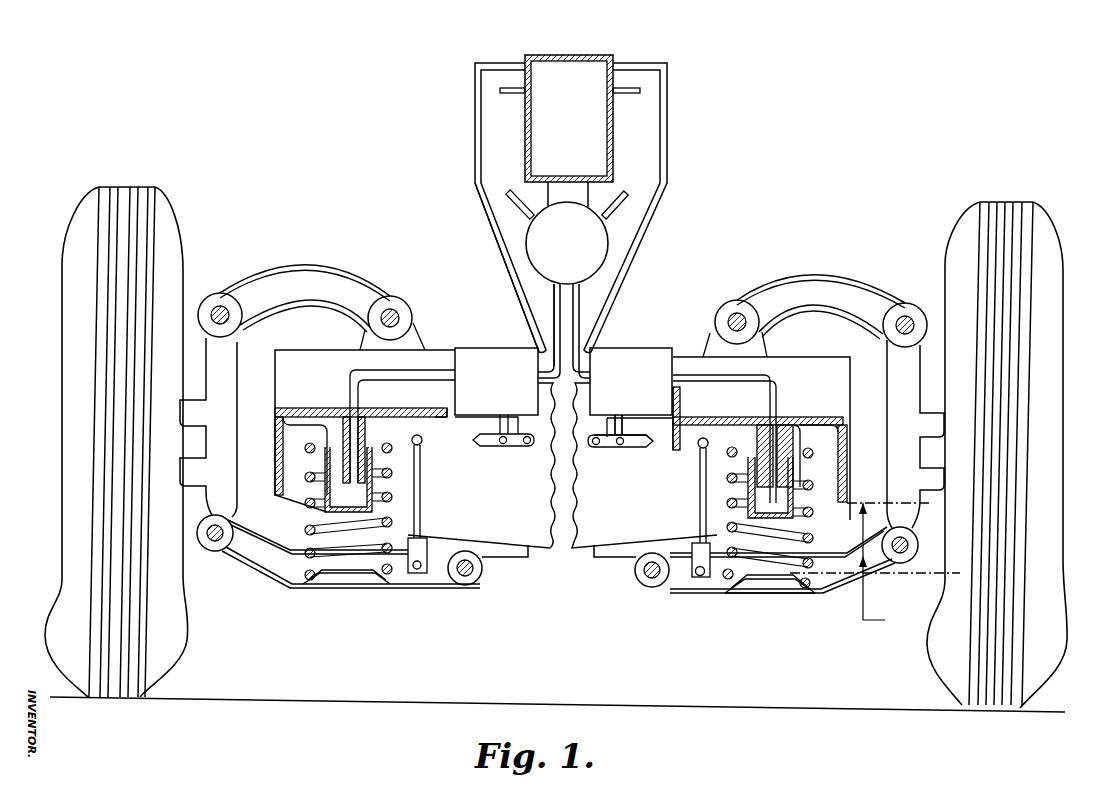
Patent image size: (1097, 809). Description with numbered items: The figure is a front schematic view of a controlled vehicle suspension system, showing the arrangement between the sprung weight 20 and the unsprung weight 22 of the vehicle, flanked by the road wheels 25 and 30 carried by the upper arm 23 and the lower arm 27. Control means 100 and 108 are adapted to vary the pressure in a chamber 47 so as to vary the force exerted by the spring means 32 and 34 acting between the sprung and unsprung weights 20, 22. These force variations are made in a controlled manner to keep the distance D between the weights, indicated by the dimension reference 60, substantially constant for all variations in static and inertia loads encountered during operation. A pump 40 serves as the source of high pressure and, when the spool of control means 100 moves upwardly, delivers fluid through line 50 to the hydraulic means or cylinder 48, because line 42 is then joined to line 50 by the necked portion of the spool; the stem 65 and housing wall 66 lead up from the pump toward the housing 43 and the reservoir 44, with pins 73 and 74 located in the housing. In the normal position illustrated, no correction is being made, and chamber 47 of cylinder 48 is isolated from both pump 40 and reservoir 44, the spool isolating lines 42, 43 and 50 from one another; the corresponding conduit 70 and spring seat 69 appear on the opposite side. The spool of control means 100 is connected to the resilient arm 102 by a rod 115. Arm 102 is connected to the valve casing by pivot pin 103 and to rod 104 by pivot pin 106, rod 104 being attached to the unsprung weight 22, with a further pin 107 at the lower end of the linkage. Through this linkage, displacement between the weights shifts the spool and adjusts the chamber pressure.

The sprung weight 20 is at (538, 521).
The unsprung weight 22 is at (817, 598).
The upper control arm 23 is at (817, 283).
The road wheel (right) 25 is at (980, 212).
The lower control arm (left) 27 is at (272, 583).
The road wheel (left) 30 is at (175, 608).
The spring means 32 is at (735, 580).
The spring means 34 is at (392, 575).
The pump 40 is at (581, 252).
The line 42 is at (578, 295).
The line 43 is at (668, 122).
The reservoir 44 is at (585, 77).
The chamber 47 is at (772, 503).
The hydraulic means or cylinder 48 is at (800, 465).
The line 50 is at (777, 395).
The dimension reference line 60 is at (870, 502).
The stem 65 is at (553, 292).
The housing wall 66 is at (475, 128).
The spring seat cup (left) 69 is at (325, 458).
The fluid conduit (left) 70 is at (348, 386).
The pin 73 is at (512, 93).
The pin 74 is at (623, 93).
The control means 100 is at (620, 345).
The resilient arm 102 is at (655, 445).
The pivot pin 103 is at (595, 445).
The rod 104 is at (692, 512).
The pivot pin 106 is at (700, 452).
The pivot pin 107 is at (698, 577).
The control means 108 is at (500, 345).
The rod 115 is at (619, 438).